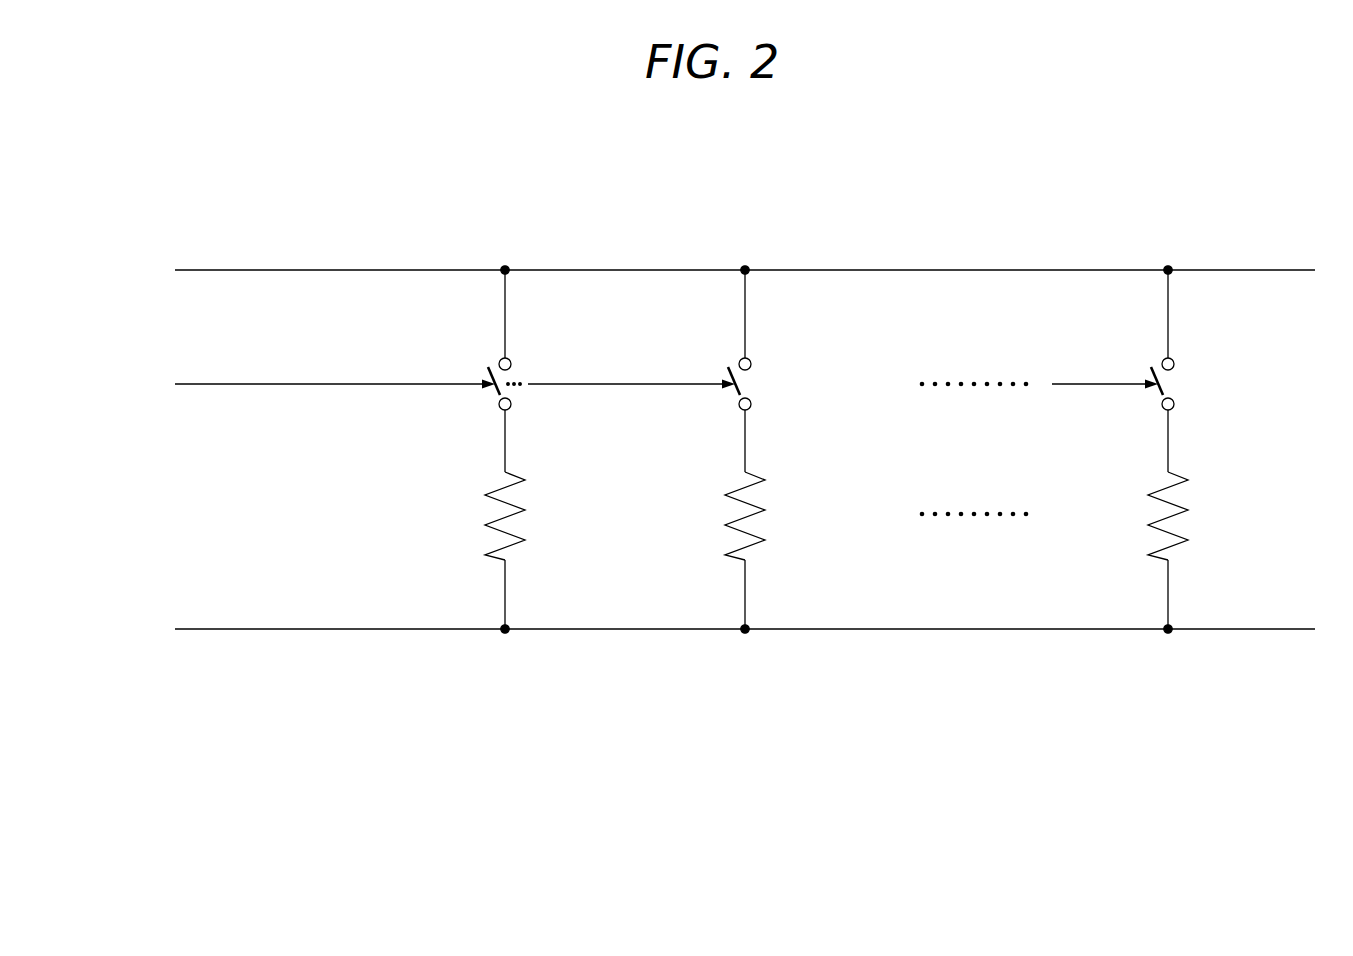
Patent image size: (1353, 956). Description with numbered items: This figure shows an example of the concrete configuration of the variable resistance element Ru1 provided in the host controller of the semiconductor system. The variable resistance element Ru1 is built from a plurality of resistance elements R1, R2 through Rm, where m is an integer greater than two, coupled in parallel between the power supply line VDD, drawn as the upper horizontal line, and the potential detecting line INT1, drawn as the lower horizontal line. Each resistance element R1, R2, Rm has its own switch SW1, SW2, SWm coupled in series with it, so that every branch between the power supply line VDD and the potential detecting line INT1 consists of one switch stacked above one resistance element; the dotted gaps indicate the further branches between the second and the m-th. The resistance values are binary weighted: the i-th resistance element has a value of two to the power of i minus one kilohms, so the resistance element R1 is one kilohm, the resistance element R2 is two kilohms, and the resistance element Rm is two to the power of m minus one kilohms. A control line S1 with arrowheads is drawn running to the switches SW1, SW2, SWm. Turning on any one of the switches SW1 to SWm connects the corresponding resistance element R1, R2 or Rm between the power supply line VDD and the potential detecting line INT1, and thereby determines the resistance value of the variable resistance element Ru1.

The variable resistance element Ru1 is at (687, 199).
The power supply line VDD is at (260, 236).
The potential detecting line INT1 is at (260, 596).
The switch control signal line S1 is at (649, 384).
The switch SW1 is at (517, 376).
The switch SW2 is at (752, 380).
The switch SWm is at (1175, 383).
The resistance element R1 is at (518, 497).
The resistance element R2 is at (760, 497).
The resistance element Rm is at (1182, 497).